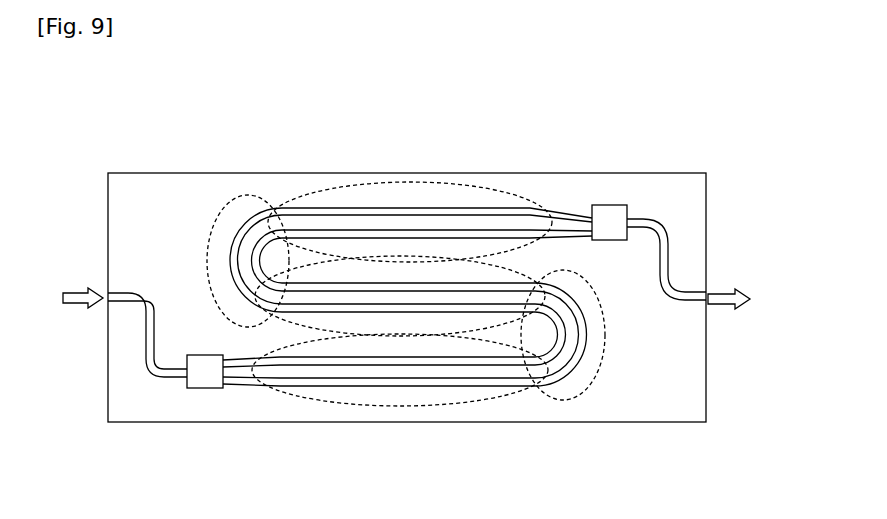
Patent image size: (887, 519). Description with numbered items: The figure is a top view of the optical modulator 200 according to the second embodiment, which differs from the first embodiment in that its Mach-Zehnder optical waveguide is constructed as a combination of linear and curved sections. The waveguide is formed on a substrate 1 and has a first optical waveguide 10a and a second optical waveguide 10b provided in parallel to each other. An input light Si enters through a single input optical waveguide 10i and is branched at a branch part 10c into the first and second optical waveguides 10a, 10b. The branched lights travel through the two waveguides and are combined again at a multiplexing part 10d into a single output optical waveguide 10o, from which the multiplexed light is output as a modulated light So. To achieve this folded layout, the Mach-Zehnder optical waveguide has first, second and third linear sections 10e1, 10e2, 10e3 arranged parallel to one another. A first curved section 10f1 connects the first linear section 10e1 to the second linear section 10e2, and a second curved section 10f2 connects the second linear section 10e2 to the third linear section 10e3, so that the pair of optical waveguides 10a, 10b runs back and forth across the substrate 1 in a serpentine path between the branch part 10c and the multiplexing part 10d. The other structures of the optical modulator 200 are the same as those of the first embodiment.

The optical modulator 200 is at (109, 103).
The substrate 1 is at (665, 422).
The first optical waveguide 10a is at (362, 218).
The second optical waveguide 10b is at (447, 232).
The branch part 10c is at (208, 378).
The multiplexing part 10d is at (606, 216).
The first linear section 10e1 is at (452, 403).
The second linear section 10e2 is at (490, 266).
The third linear section 10e3 is at (490, 190).
The first curved section 10f1 is at (588, 392).
The second curved section 10f2 is at (240, 198).
The input optical waveguide 10i is at (146, 330).
The output optical waveguide 10o is at (668, 250).
The input light Si is at (77, 288).
The modulated light So is at (722, 291).